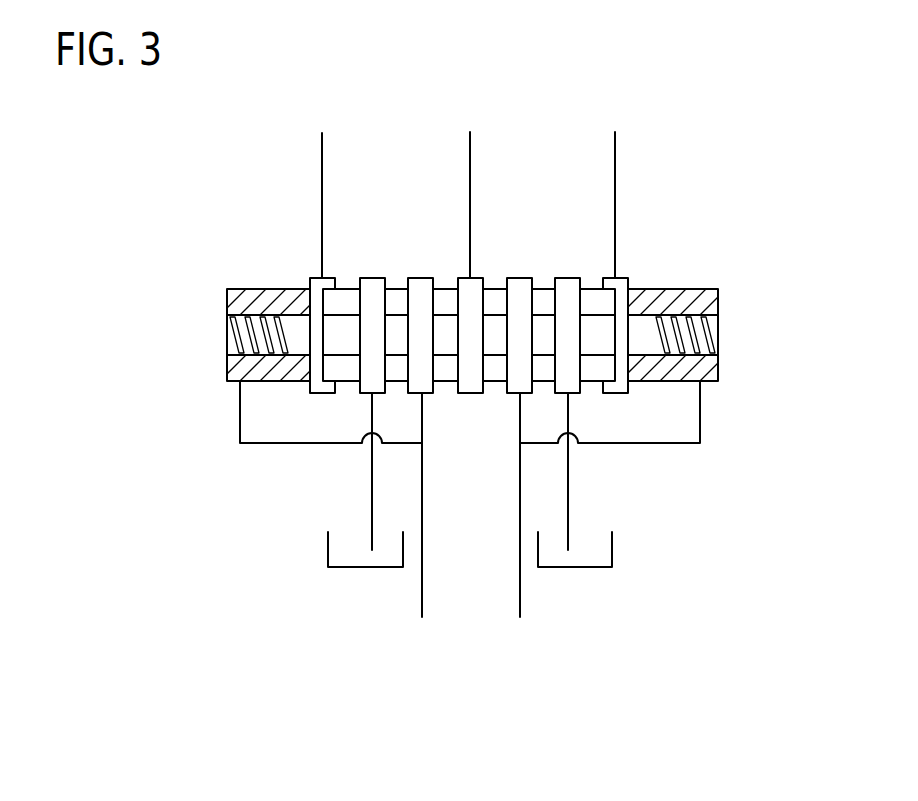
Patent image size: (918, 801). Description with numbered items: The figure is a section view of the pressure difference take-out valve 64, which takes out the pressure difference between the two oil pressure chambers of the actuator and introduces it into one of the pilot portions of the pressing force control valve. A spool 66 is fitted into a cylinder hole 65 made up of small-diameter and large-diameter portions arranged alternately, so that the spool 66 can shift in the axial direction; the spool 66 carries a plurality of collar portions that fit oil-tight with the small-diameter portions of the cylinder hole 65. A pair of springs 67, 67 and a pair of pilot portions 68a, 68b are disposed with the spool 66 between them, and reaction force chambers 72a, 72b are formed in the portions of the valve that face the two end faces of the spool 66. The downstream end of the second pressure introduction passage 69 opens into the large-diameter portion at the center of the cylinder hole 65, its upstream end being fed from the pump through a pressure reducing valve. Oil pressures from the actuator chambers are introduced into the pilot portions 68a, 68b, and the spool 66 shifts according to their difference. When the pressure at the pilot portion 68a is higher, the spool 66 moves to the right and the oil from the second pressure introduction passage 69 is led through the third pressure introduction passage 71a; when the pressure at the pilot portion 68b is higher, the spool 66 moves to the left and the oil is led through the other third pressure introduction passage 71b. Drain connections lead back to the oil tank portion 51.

The oil tank portion 51 is at (353, 565).
The pressure difference take-out valve 64 is at (716, 270).
The cylinder hole 65 is at (408, 288).
The spool 66 is at (545, 313).
The spring 67 is at (235, 342).
The pilot portion 68a is at (317, 280).
The pilot portion 68b is at (622, 284).
The second pressure introduction passage 69 is at (471, 176).
The third pressure introduction passage 71a is at (518, 588).
The third pressure introduction passage 71b is at (424, 588).
The reaction force chamber 72a is at (677, 330).
The reaction force chamber 72b is at (250, 332).